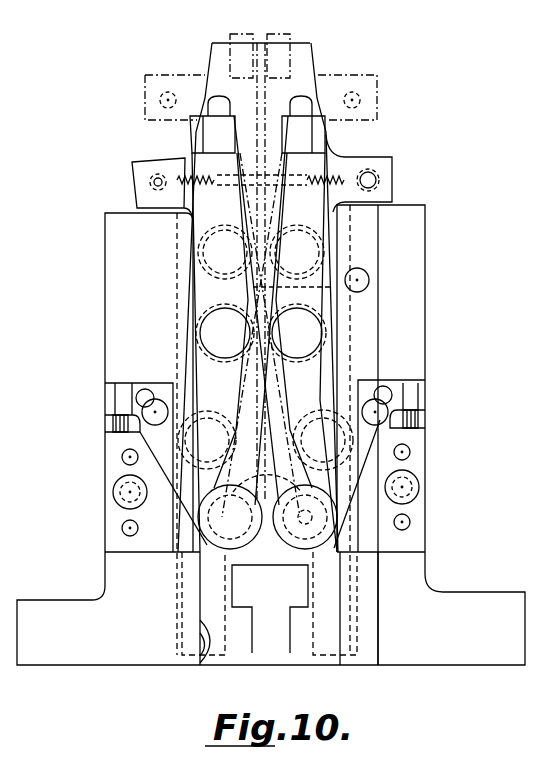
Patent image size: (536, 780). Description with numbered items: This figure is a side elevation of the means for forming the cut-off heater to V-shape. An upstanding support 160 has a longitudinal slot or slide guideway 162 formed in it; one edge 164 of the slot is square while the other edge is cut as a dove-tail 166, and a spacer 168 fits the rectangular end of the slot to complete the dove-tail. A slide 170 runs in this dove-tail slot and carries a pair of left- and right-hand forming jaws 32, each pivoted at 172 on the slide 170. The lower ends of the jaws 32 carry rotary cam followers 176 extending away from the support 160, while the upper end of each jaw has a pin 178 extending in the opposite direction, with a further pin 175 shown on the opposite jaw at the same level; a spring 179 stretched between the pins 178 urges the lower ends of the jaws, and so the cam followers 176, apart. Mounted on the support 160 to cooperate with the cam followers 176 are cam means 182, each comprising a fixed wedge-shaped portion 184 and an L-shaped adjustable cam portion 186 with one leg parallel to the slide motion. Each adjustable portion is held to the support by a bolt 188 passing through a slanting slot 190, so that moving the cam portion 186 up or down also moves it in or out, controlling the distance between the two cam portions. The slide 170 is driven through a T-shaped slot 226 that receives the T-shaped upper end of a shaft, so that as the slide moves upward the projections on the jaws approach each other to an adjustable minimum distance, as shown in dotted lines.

The forming jaws 32 is at (368, 153).
The upstanding support 160 is at (443, 592).
The longitudinal slot or slide guideway 162 is at (205, 660).
The square edge of slot 164 is at (385, 645).
The dove-tail 166 is at (212, 655).
The spacer 168 is at (365, 662).
The slide 170 is at (325, 655).
The pivot 172 is at (212, 333).
The pivot pin 175 is at (380, 180).
The rotary cam followers 176 is at (267, 521).
The pin 178 is at (150, 182).
The spring 179 is at (205, 174).
The cam means 182 is at (112, 475).
The fixed wedge-shaped portion 184 is at (118, 520).
The L-shaped adjustable cam portion 186 is at (110, 390).
The bolt 188 is at (143, 414).
The slanting slot 190 is at (152, 398).
The T-shaped slot 226 is at (280, 566).